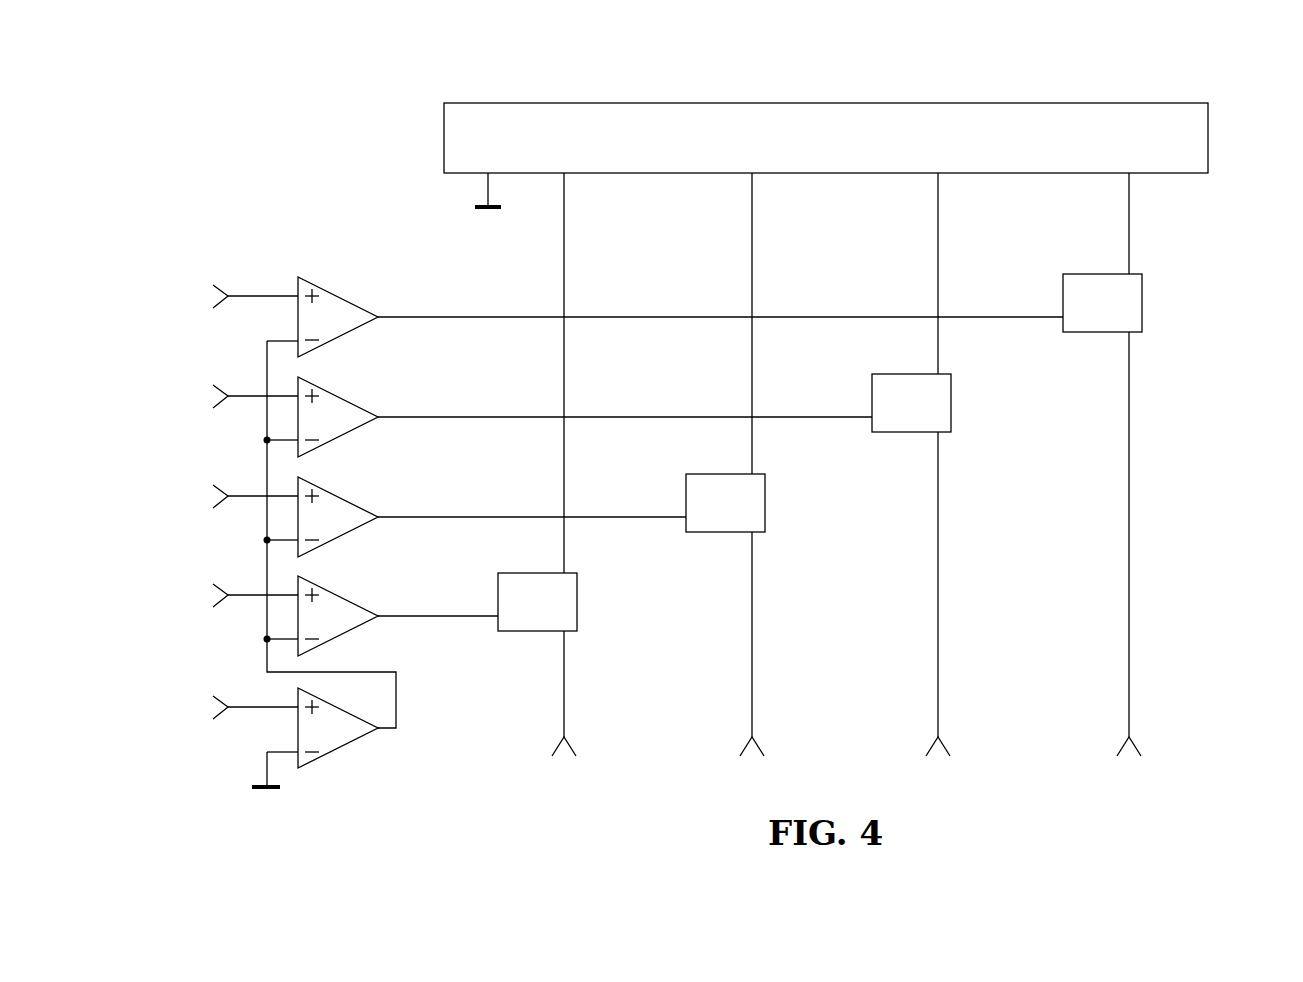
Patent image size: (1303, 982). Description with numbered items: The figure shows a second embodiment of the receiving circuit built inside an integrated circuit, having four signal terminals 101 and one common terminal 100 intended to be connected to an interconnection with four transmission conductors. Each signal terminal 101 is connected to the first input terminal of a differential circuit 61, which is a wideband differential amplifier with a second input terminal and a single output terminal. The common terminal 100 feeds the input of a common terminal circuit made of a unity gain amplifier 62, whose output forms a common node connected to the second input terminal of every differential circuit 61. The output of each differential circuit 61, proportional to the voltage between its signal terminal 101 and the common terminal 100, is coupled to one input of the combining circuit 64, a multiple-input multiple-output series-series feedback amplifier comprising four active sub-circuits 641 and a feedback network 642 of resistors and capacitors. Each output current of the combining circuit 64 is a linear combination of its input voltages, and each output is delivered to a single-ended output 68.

The combining circuit 64 is at (313, 106).
The feedback network 642 is at (1218, 160).
The active sub-circuit 641 is at (592, 624).
The differential circuit 61 is at (363, 298).
The unity gain amplifier 62 is at (380, 748).
The output 68 is at (575, 717).
The common terminal 100 is at (211, 708).
The signal terminal 101 is at (211, 297).